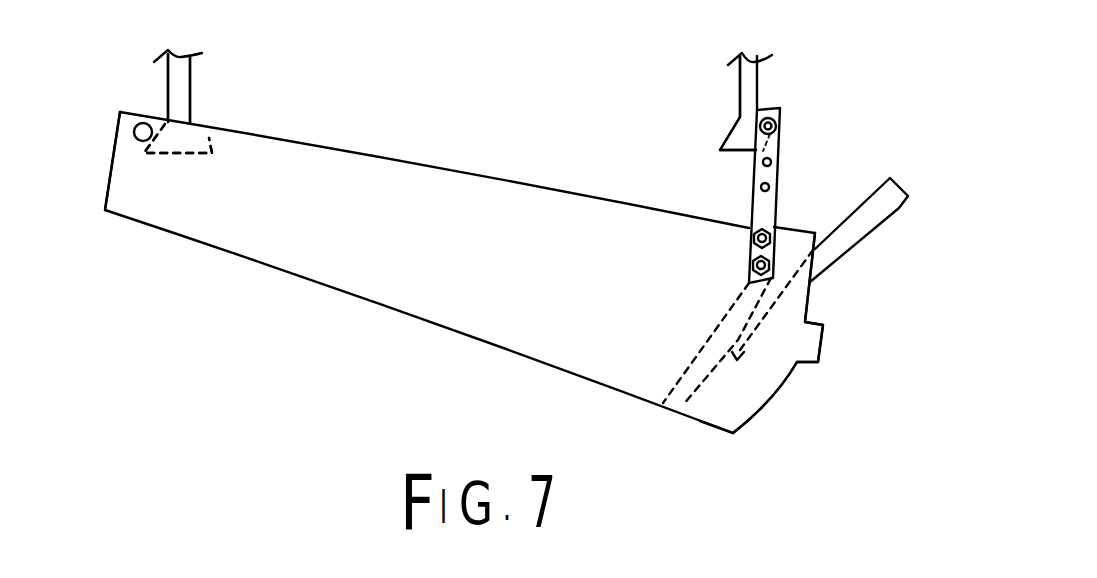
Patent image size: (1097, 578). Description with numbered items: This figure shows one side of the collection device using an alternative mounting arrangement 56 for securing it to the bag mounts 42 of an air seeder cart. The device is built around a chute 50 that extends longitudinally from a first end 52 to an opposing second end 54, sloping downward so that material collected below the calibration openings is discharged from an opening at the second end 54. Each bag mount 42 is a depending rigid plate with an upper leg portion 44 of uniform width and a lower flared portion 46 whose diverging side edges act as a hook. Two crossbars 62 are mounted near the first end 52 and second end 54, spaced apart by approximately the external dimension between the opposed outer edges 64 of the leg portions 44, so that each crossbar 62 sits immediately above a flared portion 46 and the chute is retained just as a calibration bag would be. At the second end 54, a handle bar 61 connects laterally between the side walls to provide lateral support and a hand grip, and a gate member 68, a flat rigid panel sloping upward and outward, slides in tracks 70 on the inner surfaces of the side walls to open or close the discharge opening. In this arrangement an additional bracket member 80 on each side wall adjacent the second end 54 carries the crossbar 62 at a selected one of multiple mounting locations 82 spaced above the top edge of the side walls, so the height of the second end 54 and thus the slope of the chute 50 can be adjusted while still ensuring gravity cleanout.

The bag mount 42 is at (177, 170).
The upper leg portion 44 is at (175, 102).
The lower flared portion 46 is at (211, 132).
The chute 50 is at (459, 191).
The first end 52 is at (104, 242).
The second end 54 is at (752, 458).
The mounting arrangement 56 is at (853, 194).
The handle bar 61 is at (823, 327).
The crossbar 62 is at (134, 134).
The outer edge 64 is at (168, 79).
The gate member 68 is at (853, 227).
The track 70 is at (766, 336).
The bracket member 80 is at (775, 206).
The mounting location 82 is at (777, 182).